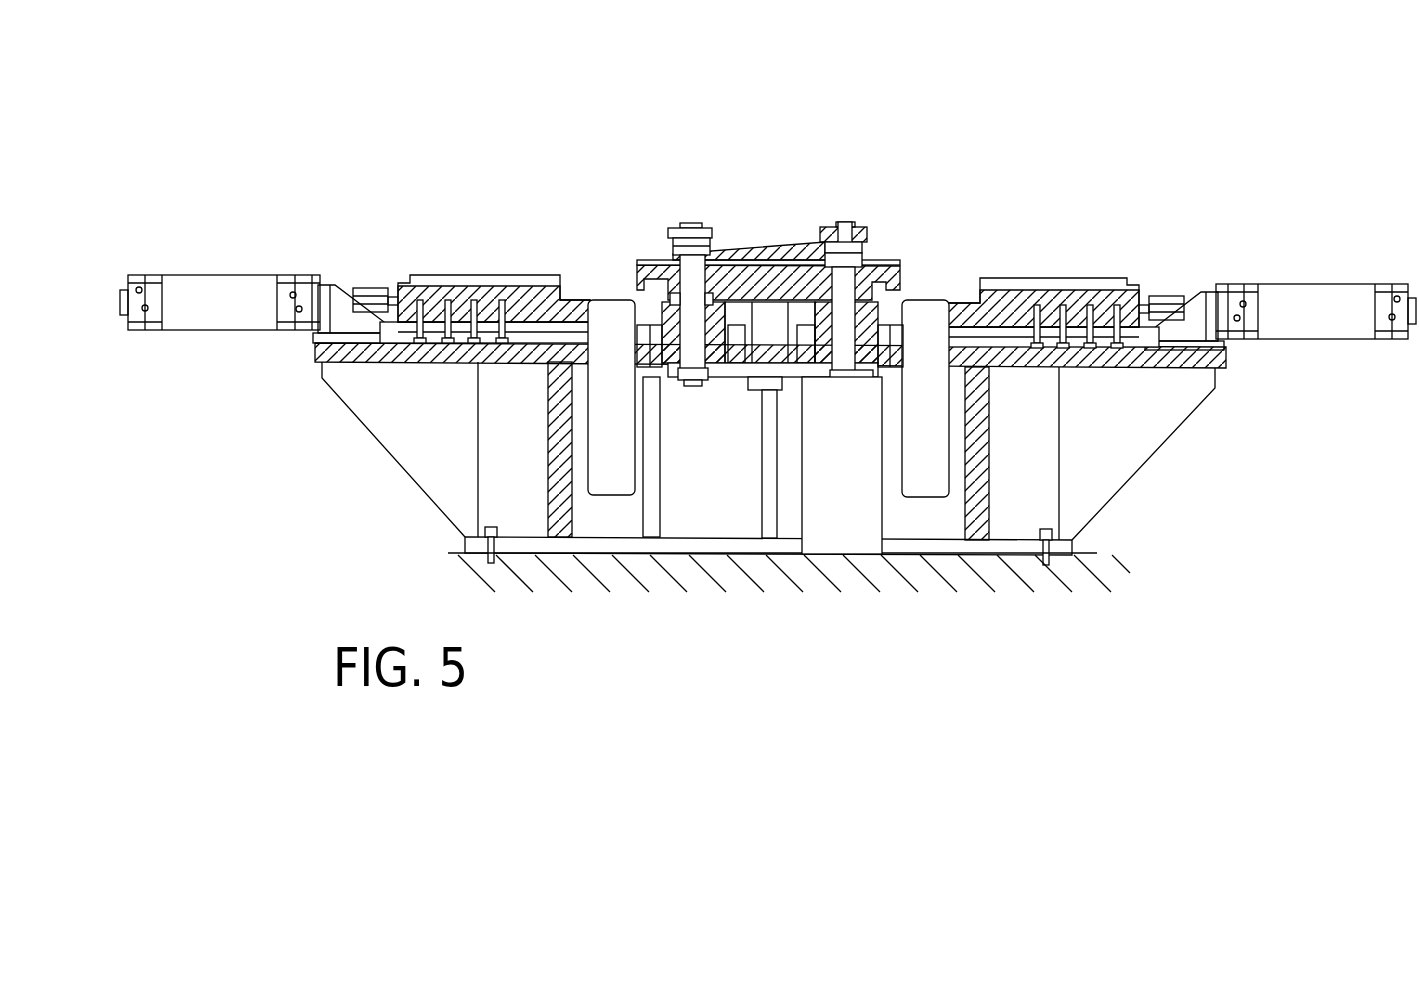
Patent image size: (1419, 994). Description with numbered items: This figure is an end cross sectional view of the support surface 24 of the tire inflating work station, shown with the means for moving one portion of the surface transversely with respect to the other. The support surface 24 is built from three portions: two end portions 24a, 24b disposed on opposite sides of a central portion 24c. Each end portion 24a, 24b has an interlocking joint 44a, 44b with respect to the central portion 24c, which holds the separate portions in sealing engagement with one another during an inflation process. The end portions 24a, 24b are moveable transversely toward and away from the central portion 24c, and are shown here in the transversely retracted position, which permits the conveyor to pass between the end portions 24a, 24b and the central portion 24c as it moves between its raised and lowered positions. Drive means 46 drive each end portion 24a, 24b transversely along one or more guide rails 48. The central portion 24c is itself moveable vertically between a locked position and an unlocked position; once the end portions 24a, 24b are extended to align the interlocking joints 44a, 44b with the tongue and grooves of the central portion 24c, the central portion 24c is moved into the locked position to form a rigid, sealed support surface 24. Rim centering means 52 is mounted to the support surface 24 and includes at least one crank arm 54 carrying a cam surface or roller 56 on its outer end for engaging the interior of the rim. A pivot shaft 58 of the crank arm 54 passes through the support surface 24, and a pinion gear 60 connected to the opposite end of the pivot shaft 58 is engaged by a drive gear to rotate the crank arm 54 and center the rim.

The support surface 24 is at (498, 190).
The end portion 24a is at (440, 278).
The end portion 24b is at (1020, 285).
The central portion 24c is at (645, 262).
The interlocking joint 44a is at (625, 310).
The interlocking joint 44b is at (900, 310).
The drive means 46 is at (210, 278).
The guide rail 48 is at (528, 340).
The rim centering means 52 is at (810, 190).
The crank arm 54 is at (762, 252).
The cam surface or roller 56 is at (712, 226).
The pivot shaft 58 is at (695, 355).
The pinion gear 60 is at (745, 382).